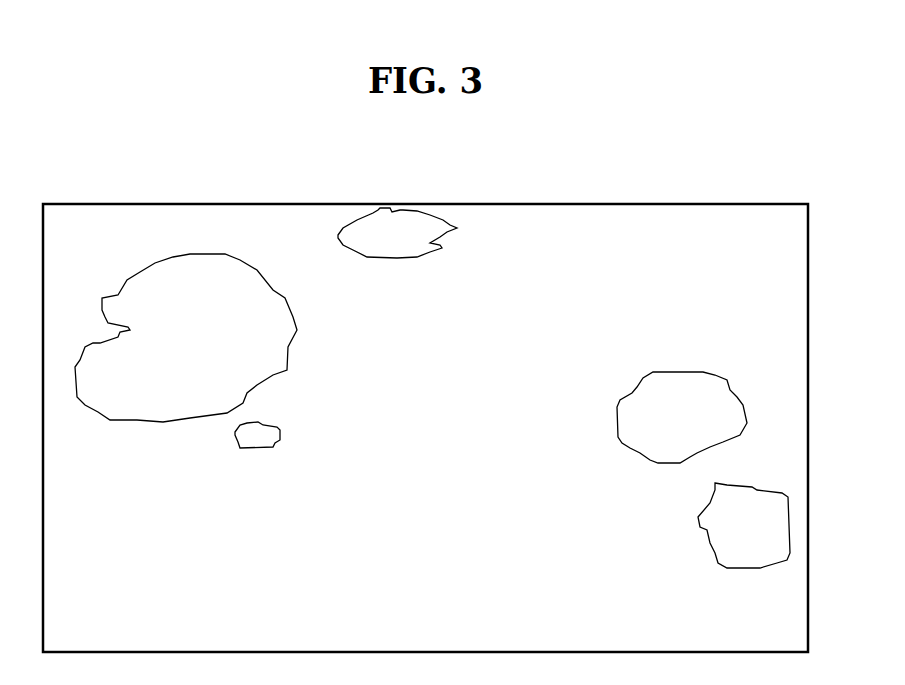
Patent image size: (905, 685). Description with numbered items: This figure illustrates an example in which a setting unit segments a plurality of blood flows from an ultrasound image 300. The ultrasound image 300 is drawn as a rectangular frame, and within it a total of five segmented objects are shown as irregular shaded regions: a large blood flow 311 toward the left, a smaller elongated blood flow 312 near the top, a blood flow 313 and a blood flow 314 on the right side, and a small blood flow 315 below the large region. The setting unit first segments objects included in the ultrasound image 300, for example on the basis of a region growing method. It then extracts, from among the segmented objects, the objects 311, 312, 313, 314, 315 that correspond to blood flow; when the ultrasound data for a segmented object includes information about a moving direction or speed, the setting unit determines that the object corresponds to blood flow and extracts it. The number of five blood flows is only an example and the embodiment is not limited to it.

The ultrasound image 300 is at (743, 205).
The blood flow 311 is at (297, 333).
The blood flow 312 is at (457, 228).
The blood flow 313 is at (680, 372).
The blood flow 314 is at (698, 527).
The blood flow 315 is at (262, 448).